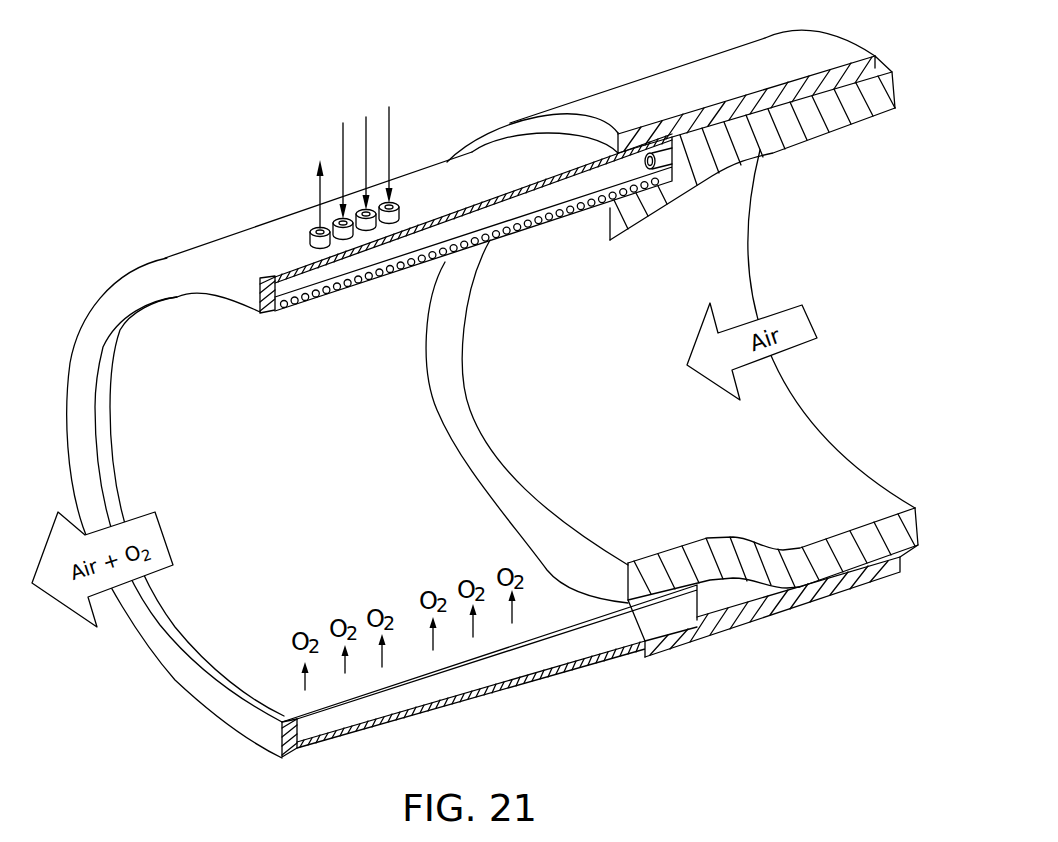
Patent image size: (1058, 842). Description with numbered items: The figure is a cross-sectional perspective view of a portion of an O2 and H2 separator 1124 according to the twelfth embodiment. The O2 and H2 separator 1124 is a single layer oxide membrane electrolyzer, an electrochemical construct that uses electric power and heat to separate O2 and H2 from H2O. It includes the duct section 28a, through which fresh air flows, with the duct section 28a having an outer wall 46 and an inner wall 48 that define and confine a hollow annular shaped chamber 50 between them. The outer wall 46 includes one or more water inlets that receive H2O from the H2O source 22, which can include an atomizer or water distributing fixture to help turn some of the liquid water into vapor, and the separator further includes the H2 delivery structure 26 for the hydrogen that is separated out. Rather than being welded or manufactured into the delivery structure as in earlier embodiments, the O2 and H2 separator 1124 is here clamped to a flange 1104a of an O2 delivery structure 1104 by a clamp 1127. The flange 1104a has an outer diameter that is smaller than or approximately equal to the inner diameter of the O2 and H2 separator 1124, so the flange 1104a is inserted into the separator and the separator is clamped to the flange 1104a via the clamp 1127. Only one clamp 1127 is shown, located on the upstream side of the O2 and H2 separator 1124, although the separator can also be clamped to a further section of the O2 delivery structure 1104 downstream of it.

The duct section 28a is at (208, 240).
The O2 and H2 separator 1124 is at (239, 224).
The H2 delivery structure 26 is at (310, 238).
The H2O source 22 is at (388, 222).
The O2 delivery structure 1104 is at (818, 433).
The flange 1104a is at (580, 523).
The clamp 1127 is at (790, 612).
The chamber 50 is at (420, 697).
The outer wall 46 is at (540, 672).
The inner wall 48 is at (300, 702).